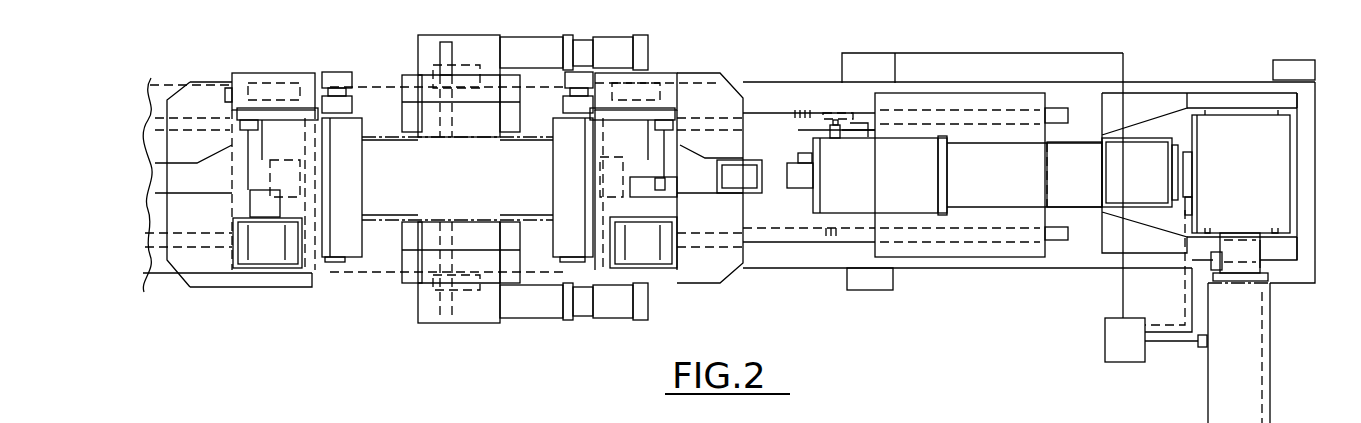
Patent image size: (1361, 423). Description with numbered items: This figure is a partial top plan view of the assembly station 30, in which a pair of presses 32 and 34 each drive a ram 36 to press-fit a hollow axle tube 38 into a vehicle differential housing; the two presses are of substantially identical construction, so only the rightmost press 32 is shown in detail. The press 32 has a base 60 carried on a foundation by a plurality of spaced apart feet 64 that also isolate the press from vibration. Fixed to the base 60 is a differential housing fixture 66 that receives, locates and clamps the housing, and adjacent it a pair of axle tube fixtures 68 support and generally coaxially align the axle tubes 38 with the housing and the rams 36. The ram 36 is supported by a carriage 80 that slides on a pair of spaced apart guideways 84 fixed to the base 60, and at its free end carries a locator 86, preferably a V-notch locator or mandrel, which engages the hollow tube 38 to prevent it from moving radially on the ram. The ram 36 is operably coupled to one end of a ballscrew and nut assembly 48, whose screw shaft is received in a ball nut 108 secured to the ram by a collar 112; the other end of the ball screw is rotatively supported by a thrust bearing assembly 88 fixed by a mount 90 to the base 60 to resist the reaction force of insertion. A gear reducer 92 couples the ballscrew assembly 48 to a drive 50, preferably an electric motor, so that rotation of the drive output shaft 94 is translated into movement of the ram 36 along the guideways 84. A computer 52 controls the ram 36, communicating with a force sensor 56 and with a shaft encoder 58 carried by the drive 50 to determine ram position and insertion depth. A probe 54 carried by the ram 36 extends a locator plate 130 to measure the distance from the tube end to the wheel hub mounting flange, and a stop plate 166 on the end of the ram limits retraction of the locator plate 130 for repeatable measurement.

The assembly station 30 is at (246, 332).
The press 32 is at (858, 306).
The press 34 is at (344, 324).
The ram 36 is at (880, 175).
The hollow axle tube 38 is at (871, 418).
The ballscrew and nut assembly 48 is at (1075, 137).
The drive 50 is at (1268, 334).
The computer 52 is at (1145, 207).
The probe 54 is at (806, 104).
The sensor 56 is at (1200, 348).
The shaft encoder 58 is at (1190, 204).
The base 60 is at (1199, 76).
The feet 64 is at (432, 284).
The differential housing fixture 66 is at (536, 242).
The axle tube fixtures 68 is at (224, 214).
The carriage 80 is at (1003, 249).
The guideways 84 is at (823, 118).
The locator 86 is at (805, 188).
The thrust bearing assembly 88 is at (1140, 172).
The mount 90 is at (1151, 123).
The gear reducer 92 is at (1241, 171).
The drive output shaft 94 is at (1263, 248).
The ball nut 108 is at (1024, 175).
The collar 112 is at (948, 168).
The locator plate 130 is at (801, 153).
The stop plate 166 is at (810, 152).